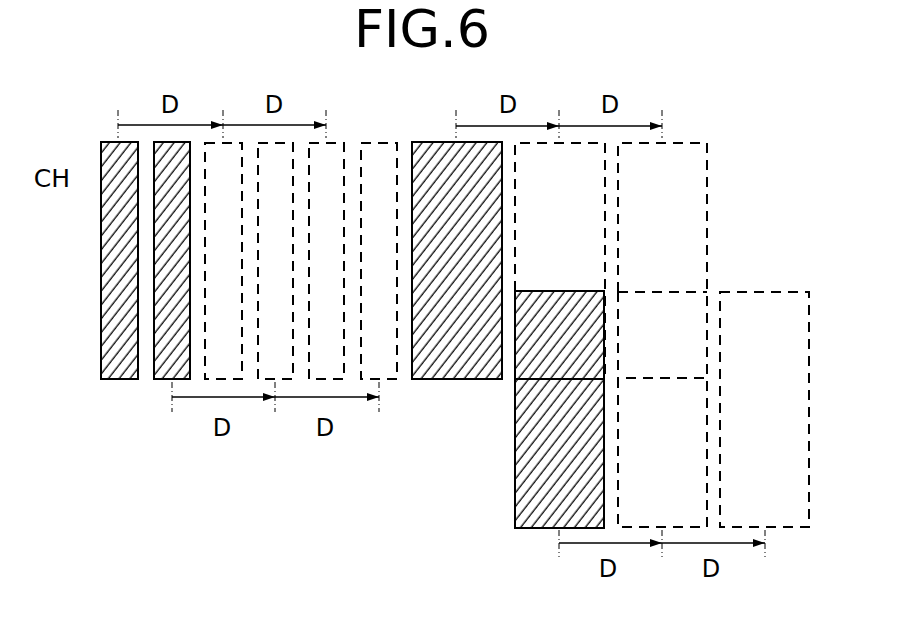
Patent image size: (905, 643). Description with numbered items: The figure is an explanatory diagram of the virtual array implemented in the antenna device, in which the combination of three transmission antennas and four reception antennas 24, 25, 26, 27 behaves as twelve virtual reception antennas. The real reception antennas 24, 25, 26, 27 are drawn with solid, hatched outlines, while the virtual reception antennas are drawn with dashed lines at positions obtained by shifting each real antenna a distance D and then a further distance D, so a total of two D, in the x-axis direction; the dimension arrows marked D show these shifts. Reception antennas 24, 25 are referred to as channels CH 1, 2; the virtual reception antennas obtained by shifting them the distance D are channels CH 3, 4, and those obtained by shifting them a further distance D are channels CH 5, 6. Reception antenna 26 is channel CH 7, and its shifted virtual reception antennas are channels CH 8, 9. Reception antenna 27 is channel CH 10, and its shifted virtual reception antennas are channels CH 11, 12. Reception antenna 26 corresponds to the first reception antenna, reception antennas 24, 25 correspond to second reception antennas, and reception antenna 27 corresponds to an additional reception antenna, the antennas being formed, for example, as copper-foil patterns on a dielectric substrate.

The channel CH1 1 is at (119, 260).
The channel CH2 2 is at (172, 260).
The channel CH3 3 is at (223, 261).
The channel CH4 4 is at (275, 261).
The channel CH5 5 is at (326, 261).
The channel CH6 6 is at (379, 261).
The channel CH7 7 is at (438, 398).
The channel CH8 8 is at (560, 261).
The channel CH9 9 is at (662, 260).
The channel CH10 10 is at (559, 409).
The channel CH11 11 is at (662, 409).
The channel CH12 12 is at (764, 409).
The reception antenna 24 is at (90, 260).
The reception antenna 25 is at (141, 279).
The reception antenna 26 is at (457, 284).
The reception antenna 27 is at (529, 409).